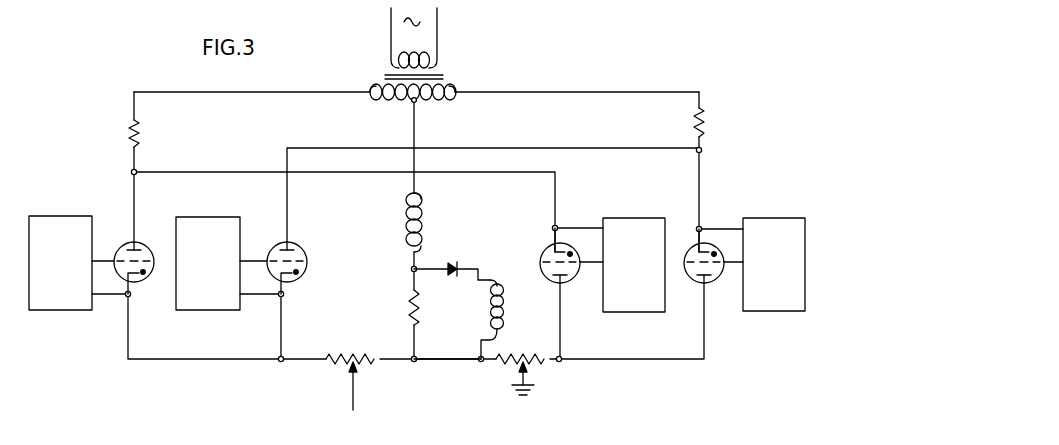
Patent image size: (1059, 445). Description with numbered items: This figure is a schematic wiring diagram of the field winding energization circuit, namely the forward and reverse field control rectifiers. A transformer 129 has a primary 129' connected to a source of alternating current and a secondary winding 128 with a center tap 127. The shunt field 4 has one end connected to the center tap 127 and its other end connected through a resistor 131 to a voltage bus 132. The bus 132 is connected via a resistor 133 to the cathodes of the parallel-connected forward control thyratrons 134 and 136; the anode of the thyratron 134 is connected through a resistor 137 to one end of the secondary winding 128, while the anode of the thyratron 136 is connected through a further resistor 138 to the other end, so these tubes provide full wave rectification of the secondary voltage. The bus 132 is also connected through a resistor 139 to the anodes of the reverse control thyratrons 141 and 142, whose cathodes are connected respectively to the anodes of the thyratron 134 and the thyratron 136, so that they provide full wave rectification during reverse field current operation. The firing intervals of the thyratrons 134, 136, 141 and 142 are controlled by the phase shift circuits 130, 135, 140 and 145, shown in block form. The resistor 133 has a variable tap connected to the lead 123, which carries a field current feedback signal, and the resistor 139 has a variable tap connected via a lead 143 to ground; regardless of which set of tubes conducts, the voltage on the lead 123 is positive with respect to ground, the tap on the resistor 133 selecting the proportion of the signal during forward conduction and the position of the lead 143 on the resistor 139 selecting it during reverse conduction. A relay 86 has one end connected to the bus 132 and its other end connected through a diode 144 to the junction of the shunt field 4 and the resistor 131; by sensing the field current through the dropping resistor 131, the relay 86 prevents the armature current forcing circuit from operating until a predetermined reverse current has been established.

The shunt field 4 is at (424, 222).
The relay 86 is at (505, 305).
The lead 123 is at (356, 390).
The center tap 127 is at (418, 104).
The secondary winding 128 is at (444, 100).
The transformer 129 is at (397, 43).
The primary 129' is at (439, 52).
The phase shift circuit 130 is at (78, 311).
The resistor 131 is at (408, 296).
The voltage bus 132 is at (455, 362).
The resistor 133 is at (352, 352).
The thyratron 134 is at (143, 247).
The phase shift circuit 135 is at (207, 311).
The thyratron 136 is at (299, 248).
The resistor 137 is at (141, 126).
The resistor 138 is at (707, 120).
The resistor 139 is at (527, 355).
The phase shift circuit 140 is at (636, 313).
The thyratron 141 is at (542, 250).
The thyratron 142 is at (711, 282).
The lead 143 is at (533, 385).
The diode 144 is at (456, 278).
The phase shift circuit 145 is at (778, 312).